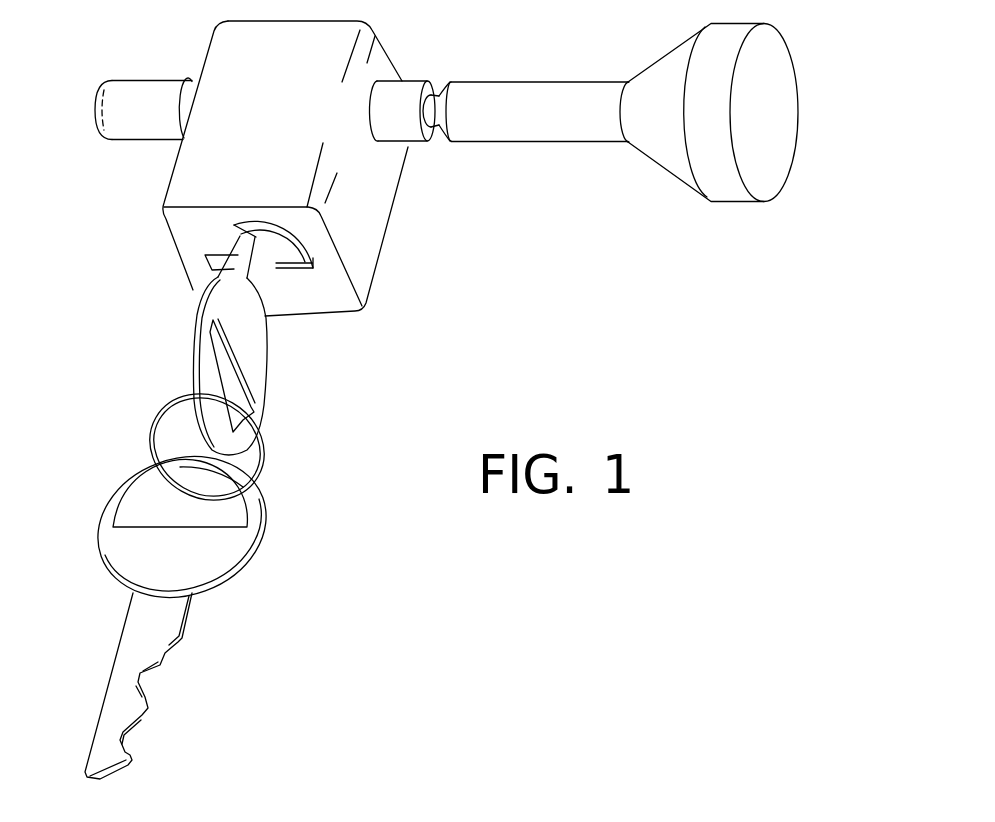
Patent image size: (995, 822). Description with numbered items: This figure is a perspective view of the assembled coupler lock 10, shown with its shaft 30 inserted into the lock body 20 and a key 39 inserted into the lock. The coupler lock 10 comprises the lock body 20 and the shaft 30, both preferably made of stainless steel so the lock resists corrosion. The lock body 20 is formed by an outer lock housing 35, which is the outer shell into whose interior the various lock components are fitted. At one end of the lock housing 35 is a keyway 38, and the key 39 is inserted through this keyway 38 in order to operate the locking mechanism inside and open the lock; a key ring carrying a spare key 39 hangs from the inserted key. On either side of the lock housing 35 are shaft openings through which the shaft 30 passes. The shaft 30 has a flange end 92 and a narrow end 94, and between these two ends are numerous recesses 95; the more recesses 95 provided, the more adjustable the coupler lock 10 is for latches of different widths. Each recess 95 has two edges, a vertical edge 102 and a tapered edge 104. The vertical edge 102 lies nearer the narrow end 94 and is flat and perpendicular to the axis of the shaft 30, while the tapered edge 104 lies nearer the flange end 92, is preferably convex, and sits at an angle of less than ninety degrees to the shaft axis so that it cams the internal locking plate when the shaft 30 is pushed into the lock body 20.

The coupler lock 10 is at (571, 270).
The lock body 20 is at (387, 245).
The shaft 30 is at (533, 143).
The lock housing 35 is at (170, 240).
The keyway 38 is at (273, 256).
The key 39 is at (255, 360).
The flange end 92 is at (767, 168).
The narrow end 94 is at (102, 92).
The recesses 95 is at (438, 138).
The vertical edge 102 is at (435, 86).
The tapered edge 104 is at (448, 88).